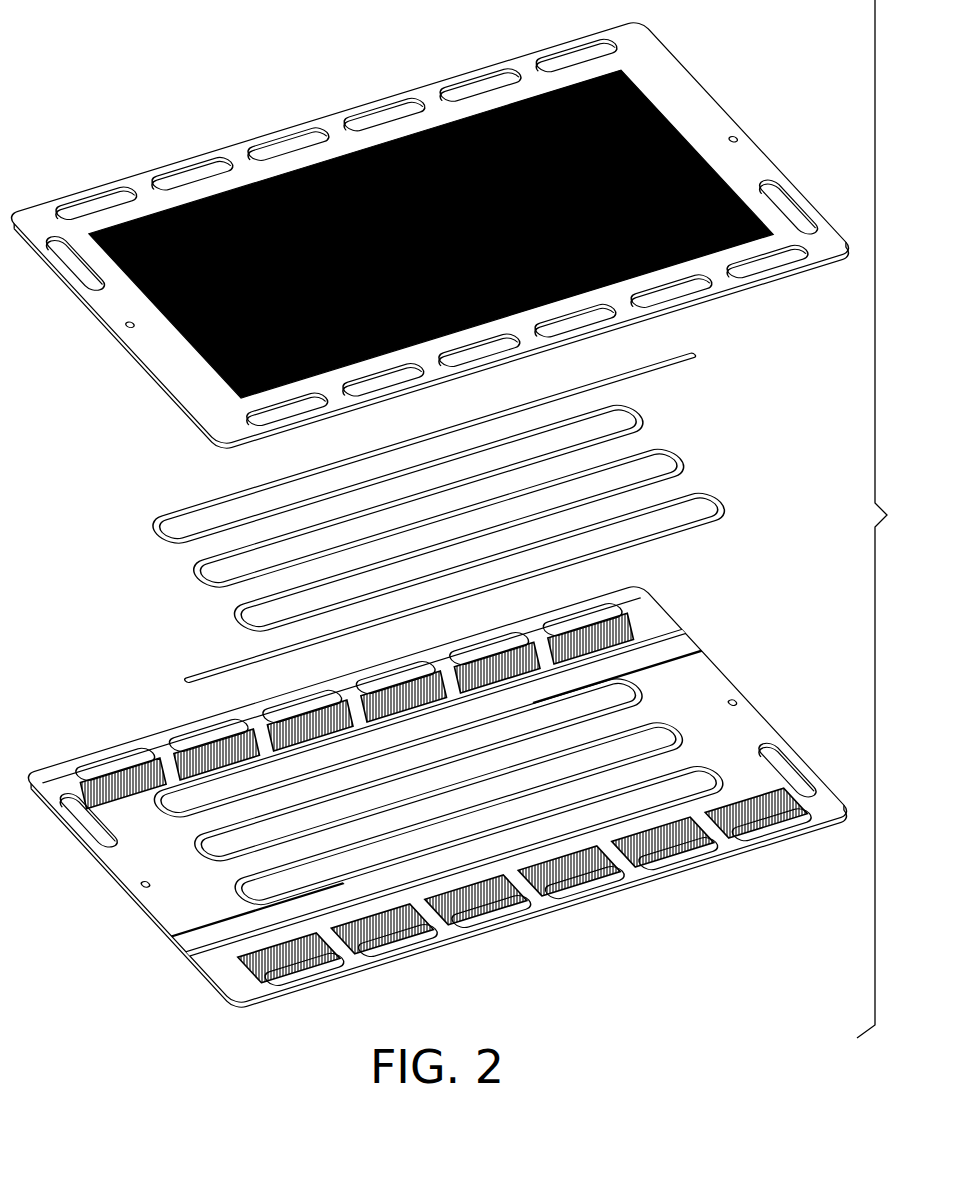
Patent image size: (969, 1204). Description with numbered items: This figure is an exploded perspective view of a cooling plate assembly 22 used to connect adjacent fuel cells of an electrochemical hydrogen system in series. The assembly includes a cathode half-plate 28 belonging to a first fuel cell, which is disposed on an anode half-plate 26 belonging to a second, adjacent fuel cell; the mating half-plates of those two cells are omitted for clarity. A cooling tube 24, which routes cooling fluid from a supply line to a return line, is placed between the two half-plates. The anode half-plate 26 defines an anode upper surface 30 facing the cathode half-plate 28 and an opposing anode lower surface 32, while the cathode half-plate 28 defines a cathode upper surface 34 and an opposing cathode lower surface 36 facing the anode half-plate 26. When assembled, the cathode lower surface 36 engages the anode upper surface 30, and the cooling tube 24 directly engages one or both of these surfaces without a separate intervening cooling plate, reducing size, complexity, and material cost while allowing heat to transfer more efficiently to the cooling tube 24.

The cooling plate assembly 22 is at (891, 519).
The cooling tube 24 is at (136, 599).
The anode half-plate 26 is at (66, 933).
The cathode half-plate 28 is at (60, 408).
The anode upper surface 30 is at (171, 913).
The anode lower surface 32 is at (260, 1008).
The cathode upper surface 34 is at (181, 381).
The cathode lower surface 36 is at (183, 424).